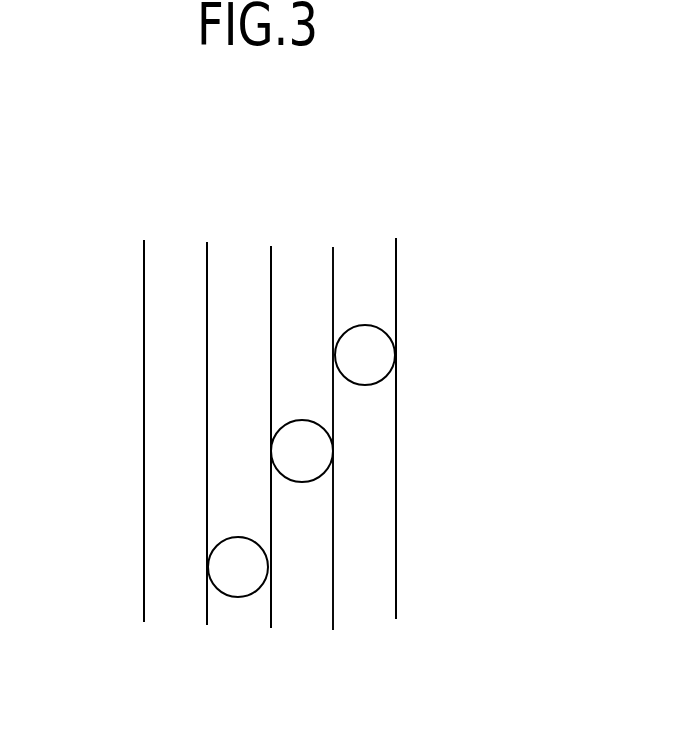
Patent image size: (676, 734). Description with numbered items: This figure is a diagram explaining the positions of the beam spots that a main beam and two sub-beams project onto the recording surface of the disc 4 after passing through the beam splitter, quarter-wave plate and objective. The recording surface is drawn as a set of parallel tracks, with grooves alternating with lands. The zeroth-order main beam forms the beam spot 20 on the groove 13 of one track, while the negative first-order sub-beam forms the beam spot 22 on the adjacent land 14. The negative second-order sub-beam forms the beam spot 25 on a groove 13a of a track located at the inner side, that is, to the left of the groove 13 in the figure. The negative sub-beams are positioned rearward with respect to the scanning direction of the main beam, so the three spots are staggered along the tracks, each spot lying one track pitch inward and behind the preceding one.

The disc 4 is at (327, 212).
The groove 13 is at (377, 444).
The groove 13a is at (233, 281).
The land 14 is at (302, 339).
The beam spot 20 is at (370, 338).
The beam spot 22 is at (283, 439).
The beam spot 25 is at (230, 563).